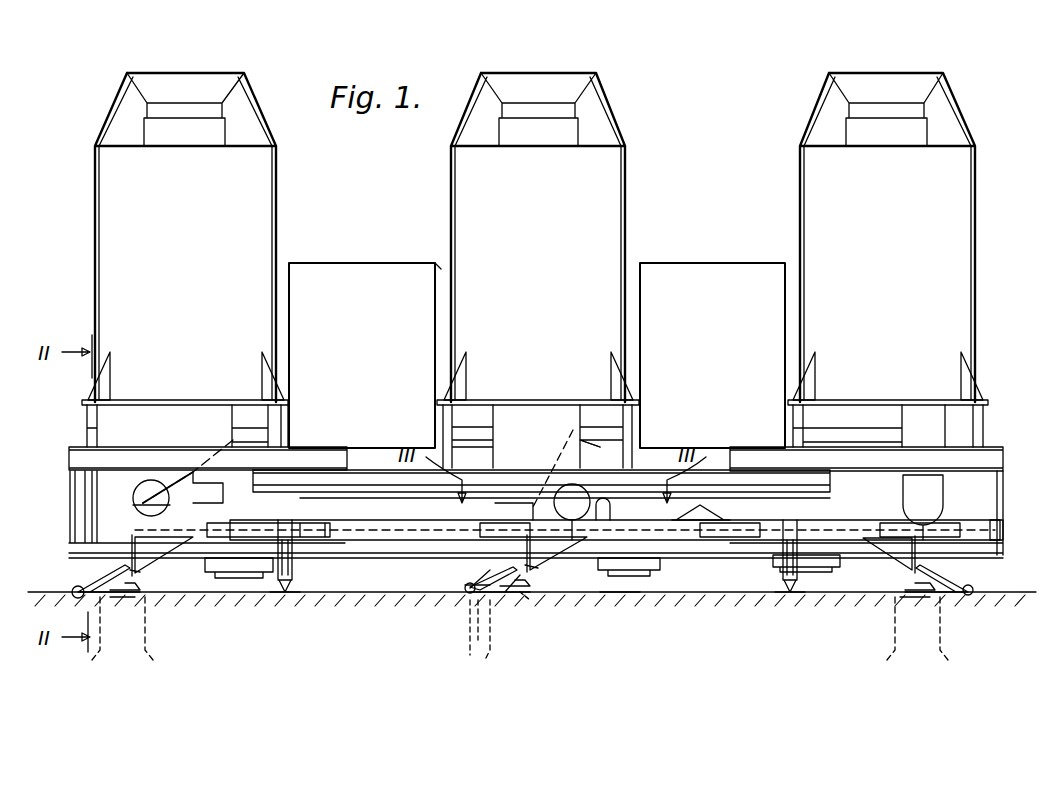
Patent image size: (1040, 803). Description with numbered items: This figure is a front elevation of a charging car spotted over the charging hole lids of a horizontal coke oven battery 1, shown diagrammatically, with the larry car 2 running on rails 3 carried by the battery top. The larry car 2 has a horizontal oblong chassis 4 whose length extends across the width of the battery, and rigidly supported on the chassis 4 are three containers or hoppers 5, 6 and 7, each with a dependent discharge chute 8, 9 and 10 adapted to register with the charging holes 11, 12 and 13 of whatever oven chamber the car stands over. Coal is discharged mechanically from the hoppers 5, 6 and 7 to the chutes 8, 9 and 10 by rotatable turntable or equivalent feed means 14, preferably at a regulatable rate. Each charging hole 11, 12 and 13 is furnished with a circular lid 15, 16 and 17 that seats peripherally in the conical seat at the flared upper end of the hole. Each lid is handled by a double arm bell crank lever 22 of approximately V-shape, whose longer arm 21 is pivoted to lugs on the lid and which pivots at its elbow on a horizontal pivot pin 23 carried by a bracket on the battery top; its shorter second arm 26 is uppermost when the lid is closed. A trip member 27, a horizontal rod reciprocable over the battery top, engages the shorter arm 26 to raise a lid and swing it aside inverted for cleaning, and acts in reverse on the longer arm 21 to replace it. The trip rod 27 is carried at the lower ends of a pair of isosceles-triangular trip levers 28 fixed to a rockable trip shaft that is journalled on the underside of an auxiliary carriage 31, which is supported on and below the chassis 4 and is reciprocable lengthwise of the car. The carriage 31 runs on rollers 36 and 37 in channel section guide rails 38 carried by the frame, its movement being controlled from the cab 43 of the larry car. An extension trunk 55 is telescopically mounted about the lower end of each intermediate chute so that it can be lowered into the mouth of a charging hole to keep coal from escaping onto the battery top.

The horizontal coke oven battery 1 is at (630, 597).
The larry car 2 is at (996, 560).
The rails 3 is at (287, 596).
The chassis 4 is at (396, 548).
The container or hopper 5 is at (184, 344).
The container or hopper 6 is at (546, 344).
The container or hopper 7 is at (886, 344).
The discharge chute 8 is at (133, 490).
The discharge chute 9 is at (533, 507).
The discharge chute 10 is at (910, 493).
The charging hole 11 is at (146, 625).
The charging hole 12 is at (490, 640).
The charging hole 13 is at (940, 598).
The rotatable turntable or feed means 14 is at (600, 447).
The circular lid 15 is at (140, 600).
The circular lid 16 is at (530, 600).
The circular lid 17 is at (905, 598).
The arm of bell crank lever 21 is at (488, 625).
The double arm lid handling bell crank lever 22 is at (465, 583).
The horizontal pivot pin 23 is at (478, 605).
The second arm of bell crank lever 26 is at (485, 583).
The trip member 27 is at (520, 592).
The trip lever 28 is at (540, 558).
The auxiliary carriage 31 is at (245, 560).
The roller 36 is at (609, 502).
The roller 37 is at (680, 525).
The channel section guide member or rail 38 is at (978, 537).
The cab 43 is at (716, 344).
The extension trunk 55 is at (640, 560).